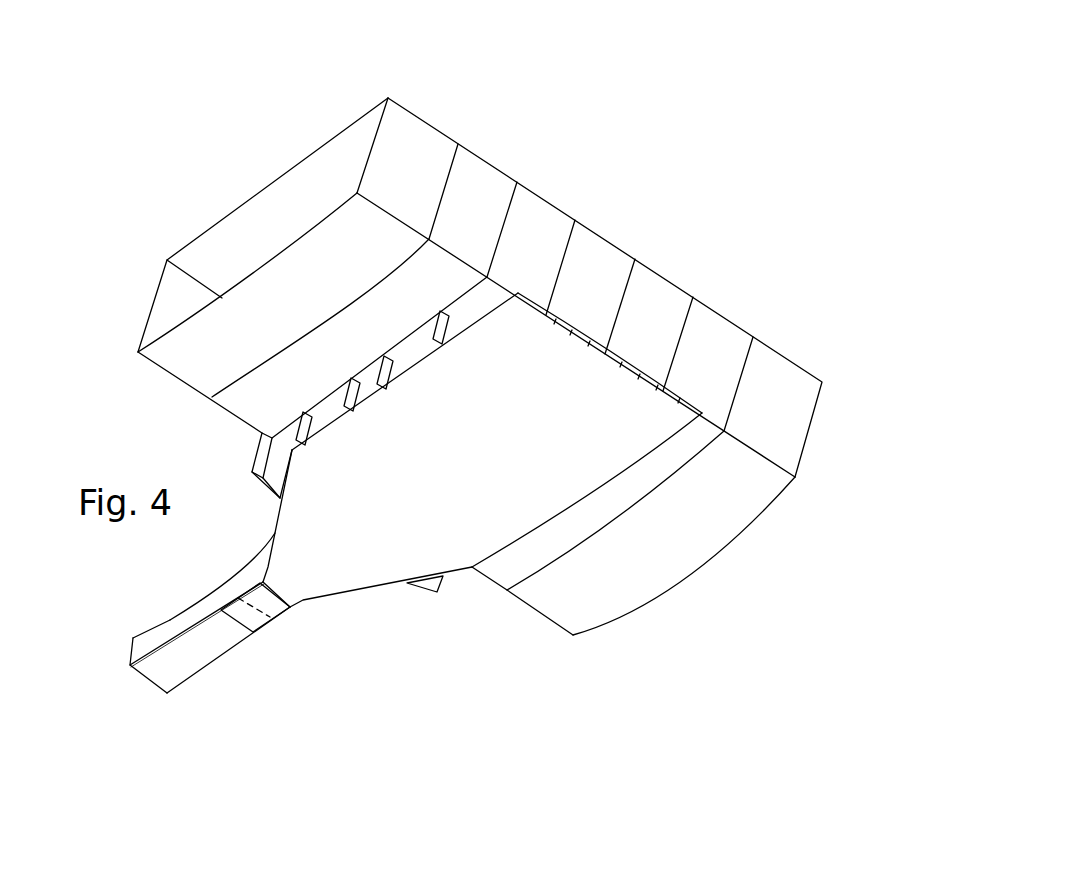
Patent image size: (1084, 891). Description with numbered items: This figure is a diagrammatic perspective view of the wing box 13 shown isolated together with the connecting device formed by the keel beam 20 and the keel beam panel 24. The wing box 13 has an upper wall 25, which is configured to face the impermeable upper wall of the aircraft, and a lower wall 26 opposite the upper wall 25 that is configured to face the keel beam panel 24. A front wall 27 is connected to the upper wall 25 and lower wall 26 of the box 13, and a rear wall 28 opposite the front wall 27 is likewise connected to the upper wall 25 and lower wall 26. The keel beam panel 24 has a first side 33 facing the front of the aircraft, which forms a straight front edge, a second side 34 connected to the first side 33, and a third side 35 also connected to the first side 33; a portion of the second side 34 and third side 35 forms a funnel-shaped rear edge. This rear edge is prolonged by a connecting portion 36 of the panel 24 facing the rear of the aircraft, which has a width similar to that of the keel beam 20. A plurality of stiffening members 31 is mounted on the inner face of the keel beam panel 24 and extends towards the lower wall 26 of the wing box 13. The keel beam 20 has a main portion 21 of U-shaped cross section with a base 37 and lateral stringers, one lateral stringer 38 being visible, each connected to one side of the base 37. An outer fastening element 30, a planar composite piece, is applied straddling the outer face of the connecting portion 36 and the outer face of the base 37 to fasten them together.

The wing box 13 is at (603, 232).
The keel beam 20 is at (311, 619).
The main portion 21 is at (178, 670).
The keel beam panel 24 is at (468, 459).
The upper wall 25 is at (258, 204).
The lower wall 26 is at (327, 238).
The front wall 27 is at (415, 126).
The rear wall 28 is at (165, 303).
The outer fastening element 30 is at (256, 628).
The stiffening members 31 is at (436, 332).
The first side 33 is at (643, 382).
The second side 34 is at (449, 341).
The third side 35 is at (595, 487).
The connecting portion 36 is at (272, 581).
The base 37 is at (152, 673).
The lateral stringer 38 is at (170, 626).